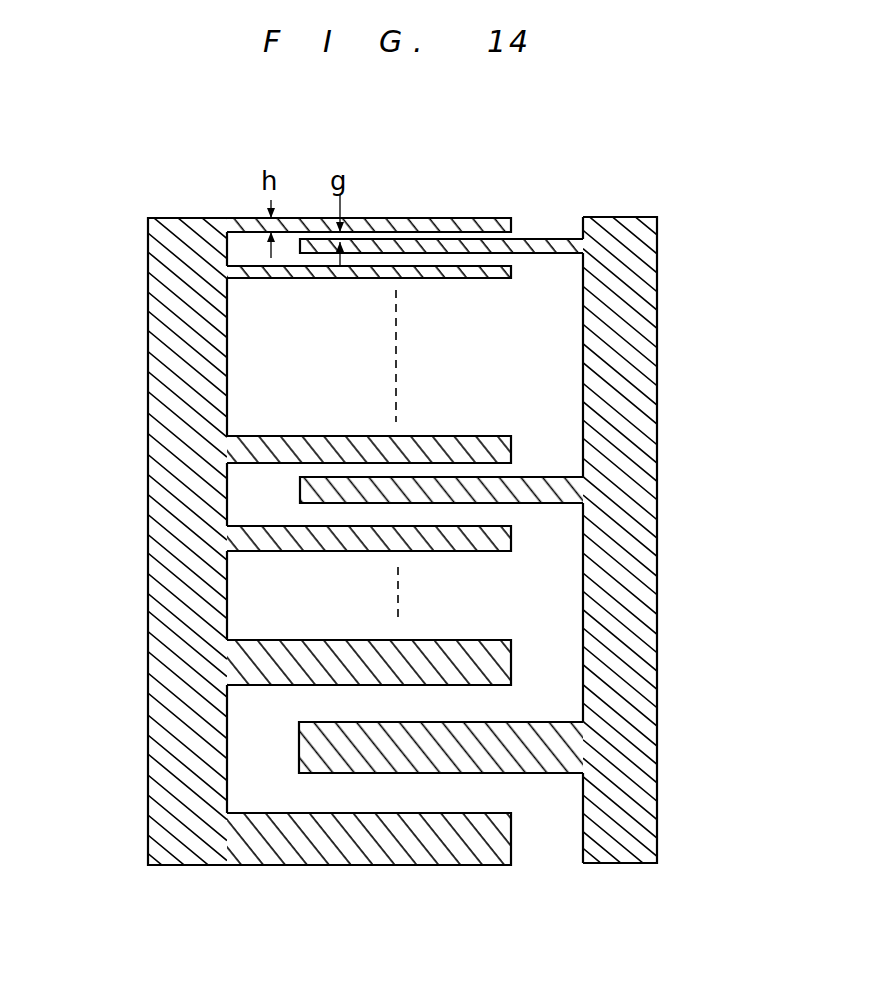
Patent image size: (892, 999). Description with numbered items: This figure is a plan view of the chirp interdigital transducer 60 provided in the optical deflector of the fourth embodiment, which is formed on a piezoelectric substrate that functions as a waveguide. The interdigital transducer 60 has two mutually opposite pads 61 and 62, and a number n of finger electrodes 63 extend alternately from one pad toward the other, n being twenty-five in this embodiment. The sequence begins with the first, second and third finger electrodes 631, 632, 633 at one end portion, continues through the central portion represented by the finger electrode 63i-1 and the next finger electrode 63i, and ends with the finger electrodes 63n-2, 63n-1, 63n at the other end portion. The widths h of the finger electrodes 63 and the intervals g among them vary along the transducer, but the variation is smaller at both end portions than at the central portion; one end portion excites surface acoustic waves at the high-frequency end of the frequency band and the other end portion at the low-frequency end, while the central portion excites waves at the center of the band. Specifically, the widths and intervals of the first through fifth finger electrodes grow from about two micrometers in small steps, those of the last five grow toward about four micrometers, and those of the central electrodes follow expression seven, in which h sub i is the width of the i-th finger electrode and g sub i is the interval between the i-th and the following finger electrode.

The interdigital transducer 60 is at (103, 292).
The pad 61 is at (155, 410).
The pad 62 is at (643, 413).
The finger electrodes 63 is at (510, 138).
The first finger electrode 631 is at (480, 220).
The second finger electrode 632 is at (533, 243).
The third finger electrode 633 is at (495, 273).
The (i-1)th finger electrode 63i-1 is at (532, 427).
The i-th finger electrode 63i is at (534, 495).
The (n-2)th finger electrode 63n-2 is at (358, 675).
The (n-1)th finger electrode 63n-1 is at (420, 760).
The n-th finger electrode 63n is at (492, 848).